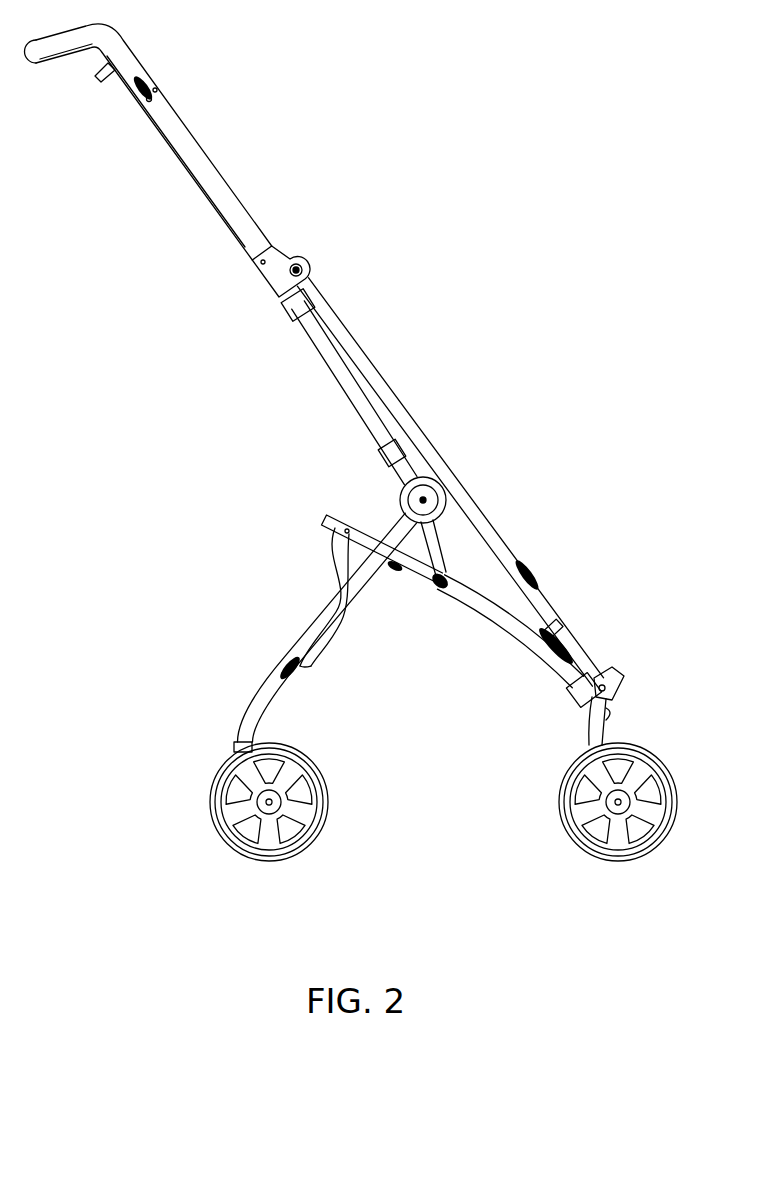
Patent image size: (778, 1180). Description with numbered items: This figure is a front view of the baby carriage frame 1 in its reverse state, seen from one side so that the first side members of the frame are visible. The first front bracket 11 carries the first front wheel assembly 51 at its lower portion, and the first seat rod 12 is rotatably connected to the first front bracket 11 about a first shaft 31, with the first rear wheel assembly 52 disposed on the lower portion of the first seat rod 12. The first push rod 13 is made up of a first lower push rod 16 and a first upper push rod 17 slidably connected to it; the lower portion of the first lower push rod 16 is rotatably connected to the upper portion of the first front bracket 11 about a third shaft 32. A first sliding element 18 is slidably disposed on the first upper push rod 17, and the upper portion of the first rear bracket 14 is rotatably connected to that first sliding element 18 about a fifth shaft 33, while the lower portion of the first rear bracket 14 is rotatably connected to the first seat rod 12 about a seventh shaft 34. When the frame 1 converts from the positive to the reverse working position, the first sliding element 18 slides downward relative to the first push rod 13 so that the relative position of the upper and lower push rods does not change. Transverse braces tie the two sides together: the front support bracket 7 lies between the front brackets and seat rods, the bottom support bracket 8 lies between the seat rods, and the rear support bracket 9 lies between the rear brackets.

The frame 1 is at (411, 141).
The front support bracket 7 is at (312, 580).
The bottom support bracket 8 is at (546, 624).
The rear support bracket 9 is at (538, 562).
The first front bracket 11 is at (253, 712).
The first seat rod 12 is at (500, 607).
The first push rod 13 is at (252, 310).
The first rear bracket 14 is at (426, 445).
The first lower push rod 16 is at (356, 395).
The first upper push rod 17 is at (197, 168).
The first sliding element 18 is at (270, 267).
The first shaft 31 is at (436, 582).
The third shaft 32 is at (428, 497).
The fifth shaft 33 is at (304, 269).
The seventh shaft 34 is at (620, 677).
The first front wheel assembly 51 is at (331, 814).
The first rear wheel assembly 52 is at (556, 807).